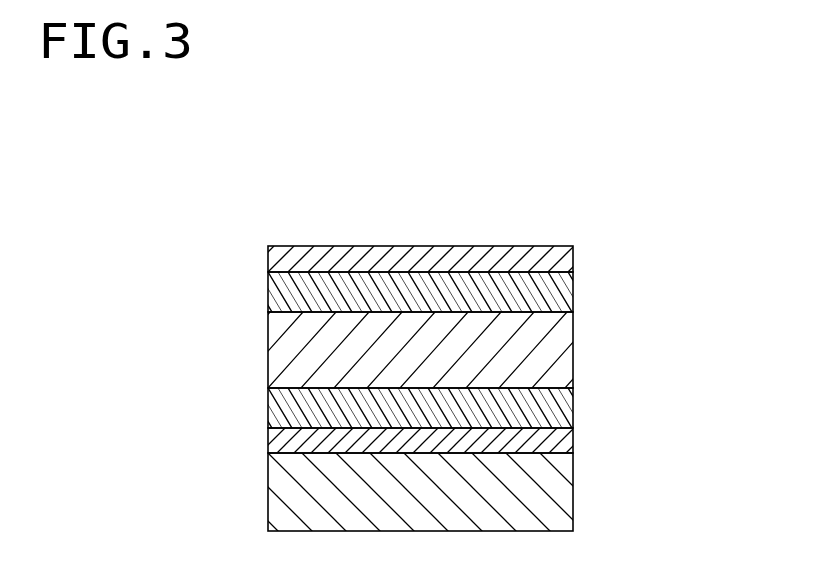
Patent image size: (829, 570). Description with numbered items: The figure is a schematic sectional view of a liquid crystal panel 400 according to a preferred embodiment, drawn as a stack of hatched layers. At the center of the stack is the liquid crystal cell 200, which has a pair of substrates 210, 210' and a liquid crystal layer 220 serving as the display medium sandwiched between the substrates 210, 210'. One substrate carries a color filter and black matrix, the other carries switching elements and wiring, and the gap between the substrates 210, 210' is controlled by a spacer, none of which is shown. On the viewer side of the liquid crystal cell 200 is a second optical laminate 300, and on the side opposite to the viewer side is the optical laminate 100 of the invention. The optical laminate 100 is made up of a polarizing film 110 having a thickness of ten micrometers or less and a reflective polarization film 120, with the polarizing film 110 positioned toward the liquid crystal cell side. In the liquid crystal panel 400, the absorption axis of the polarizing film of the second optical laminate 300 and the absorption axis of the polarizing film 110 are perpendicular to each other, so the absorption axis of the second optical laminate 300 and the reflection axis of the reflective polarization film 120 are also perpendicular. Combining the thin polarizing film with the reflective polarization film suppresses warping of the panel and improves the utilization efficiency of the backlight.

The liquid crystal panel 400 is at (678, 192).
The second optical laminate 300 is at (573, 250).
The liquid crystal cell 200 is at (507, 350).
The substrate 210 is at (470, 292).
The liquid crystal layer 220 is at (573, 352).
The substrate 210' is at (473, 408).
The optical laminate 100 is at (507, 477).
The polarizing film 110 is at (573, 435).
The reflective polarization film 120 is at (470, 492).